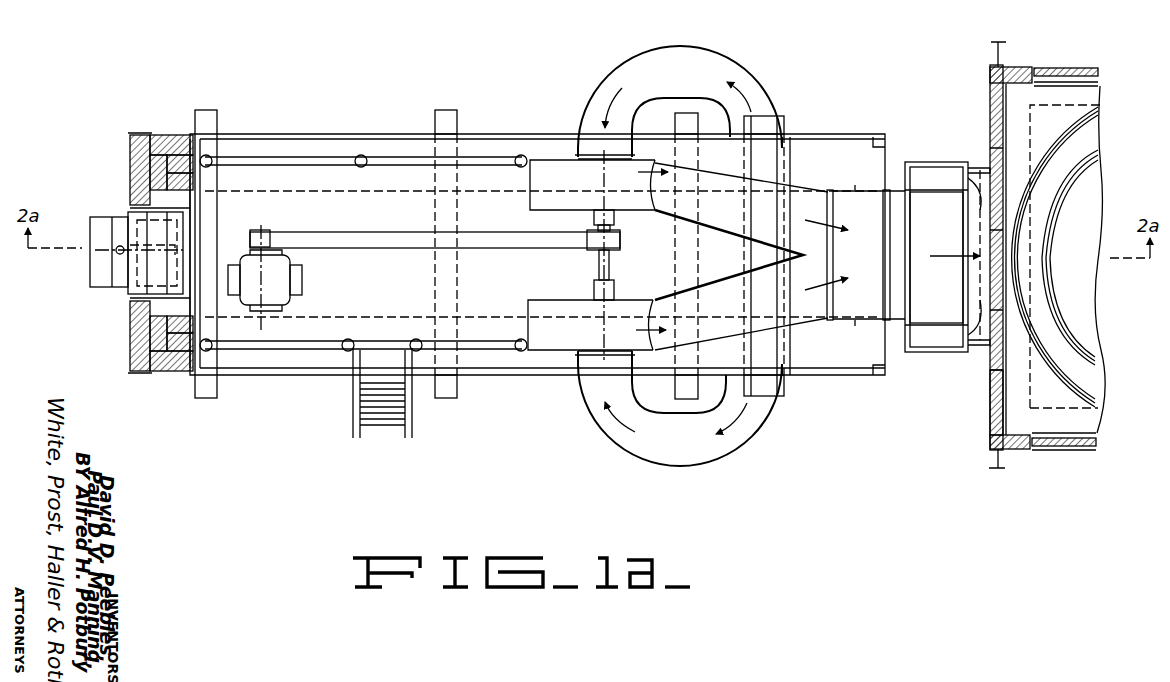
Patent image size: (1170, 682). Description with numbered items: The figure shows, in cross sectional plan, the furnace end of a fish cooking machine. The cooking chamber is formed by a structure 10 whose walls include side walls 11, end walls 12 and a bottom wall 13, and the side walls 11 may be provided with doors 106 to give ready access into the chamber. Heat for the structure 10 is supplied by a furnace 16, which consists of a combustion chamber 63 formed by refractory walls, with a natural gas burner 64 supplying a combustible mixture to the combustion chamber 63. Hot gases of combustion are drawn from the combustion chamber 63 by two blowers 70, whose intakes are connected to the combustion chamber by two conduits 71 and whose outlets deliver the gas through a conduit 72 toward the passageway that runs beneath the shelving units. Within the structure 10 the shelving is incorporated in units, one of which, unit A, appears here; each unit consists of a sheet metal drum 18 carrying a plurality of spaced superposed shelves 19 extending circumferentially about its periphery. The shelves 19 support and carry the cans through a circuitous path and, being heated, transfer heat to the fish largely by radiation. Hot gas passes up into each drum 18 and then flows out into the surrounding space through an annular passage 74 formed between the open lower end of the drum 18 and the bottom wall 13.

The furnace 16 is at (366, 130).
The combustion chamber 63 is at (186, 201).
The natural gas burner 64 is at (118, 253).
The blowers 70 is at (534, 198).
The conduits 71 is at (665, 54).
The conduit 72 is at (842, 193).
The end walls 12 is at (990, 130).
The bottom wall 13 is at (1012, 402).
The side walls 11 is at (1014, 73).
The doors 106 is at (1085, 71).
The structure 10 is at (1108, 104).
The shelves 19 is at (1100, 136).
The annular passage 74 is at (1082, 180).
The drum 18 is at (1050, 249).
The shelving unit A is at (1080, 148).